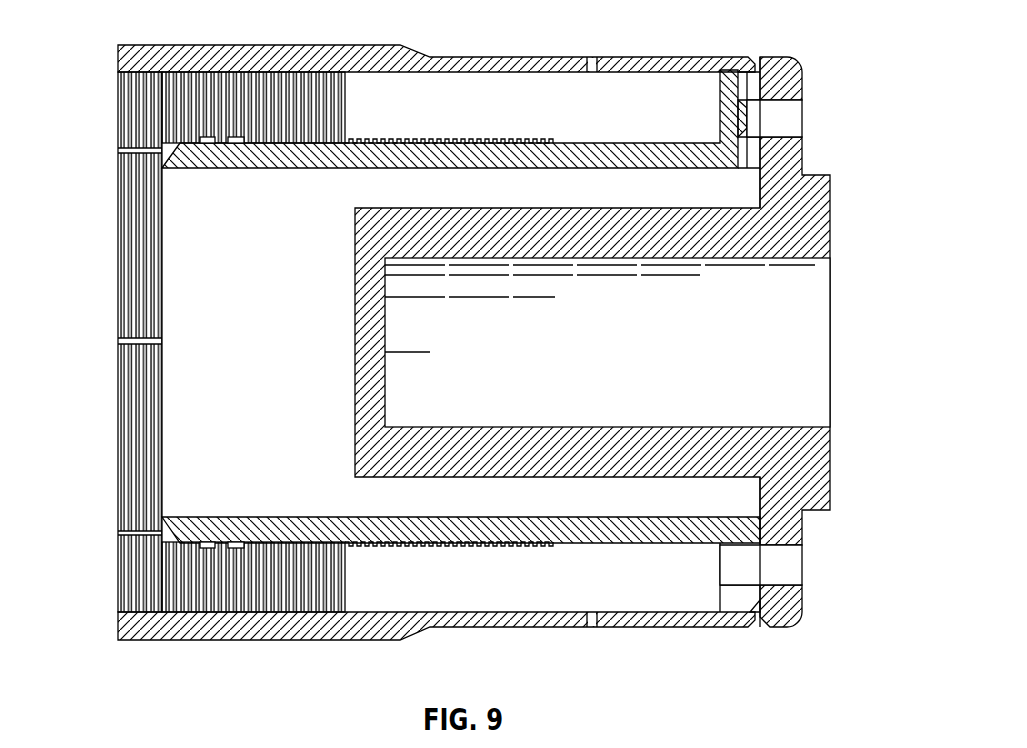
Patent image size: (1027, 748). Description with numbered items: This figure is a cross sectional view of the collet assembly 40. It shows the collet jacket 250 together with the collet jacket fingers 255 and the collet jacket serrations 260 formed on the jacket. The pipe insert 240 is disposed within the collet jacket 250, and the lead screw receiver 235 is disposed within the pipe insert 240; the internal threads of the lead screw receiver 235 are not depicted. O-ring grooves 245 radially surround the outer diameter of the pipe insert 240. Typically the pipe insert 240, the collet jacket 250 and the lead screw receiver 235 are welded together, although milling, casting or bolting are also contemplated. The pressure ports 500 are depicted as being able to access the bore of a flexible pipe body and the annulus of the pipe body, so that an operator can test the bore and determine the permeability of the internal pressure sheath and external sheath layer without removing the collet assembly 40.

The collet assembly 40 is at (633, 27).
The lead screw receiver 235 is at (805, 472).
The pipe insert 240 is at (282, 540).
The O-ring grooves 245 is at (238, 145).
The collet jacket 250 is at (680, 627).
The collet jacket fingers 255 is at (118, 536).
The collet jacket serrations 260 is at (147, 110).
The pressure ports 500 is at (795, 118).